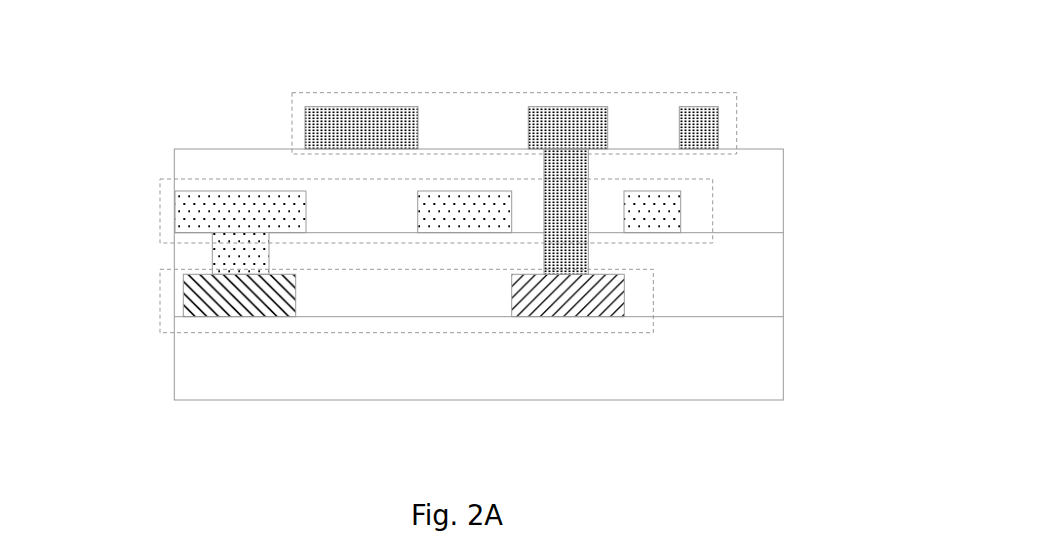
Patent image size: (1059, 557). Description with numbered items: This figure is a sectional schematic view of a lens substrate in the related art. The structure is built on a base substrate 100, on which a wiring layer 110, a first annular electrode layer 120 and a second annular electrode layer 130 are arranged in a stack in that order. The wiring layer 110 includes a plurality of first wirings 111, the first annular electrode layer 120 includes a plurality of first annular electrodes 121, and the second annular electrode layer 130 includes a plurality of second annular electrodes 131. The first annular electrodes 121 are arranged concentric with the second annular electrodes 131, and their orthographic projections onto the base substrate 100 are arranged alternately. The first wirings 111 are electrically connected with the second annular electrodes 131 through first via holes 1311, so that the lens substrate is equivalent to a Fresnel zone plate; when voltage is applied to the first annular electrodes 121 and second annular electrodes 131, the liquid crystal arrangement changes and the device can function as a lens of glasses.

The base substrate 100 is at (762, 362).
The wiring layer 110 is at (345, 370).
The first wiring 111 is at (576, 301).
The first annular electrode layer 120 is at (460, 211).
The first annular electrode 121 is at (190, 215).
The second annular electrode layer 130 is at (542, 142).
The second annular electrode 131 is at (362, 108).
The first via hole 1311 is at (572, 200).